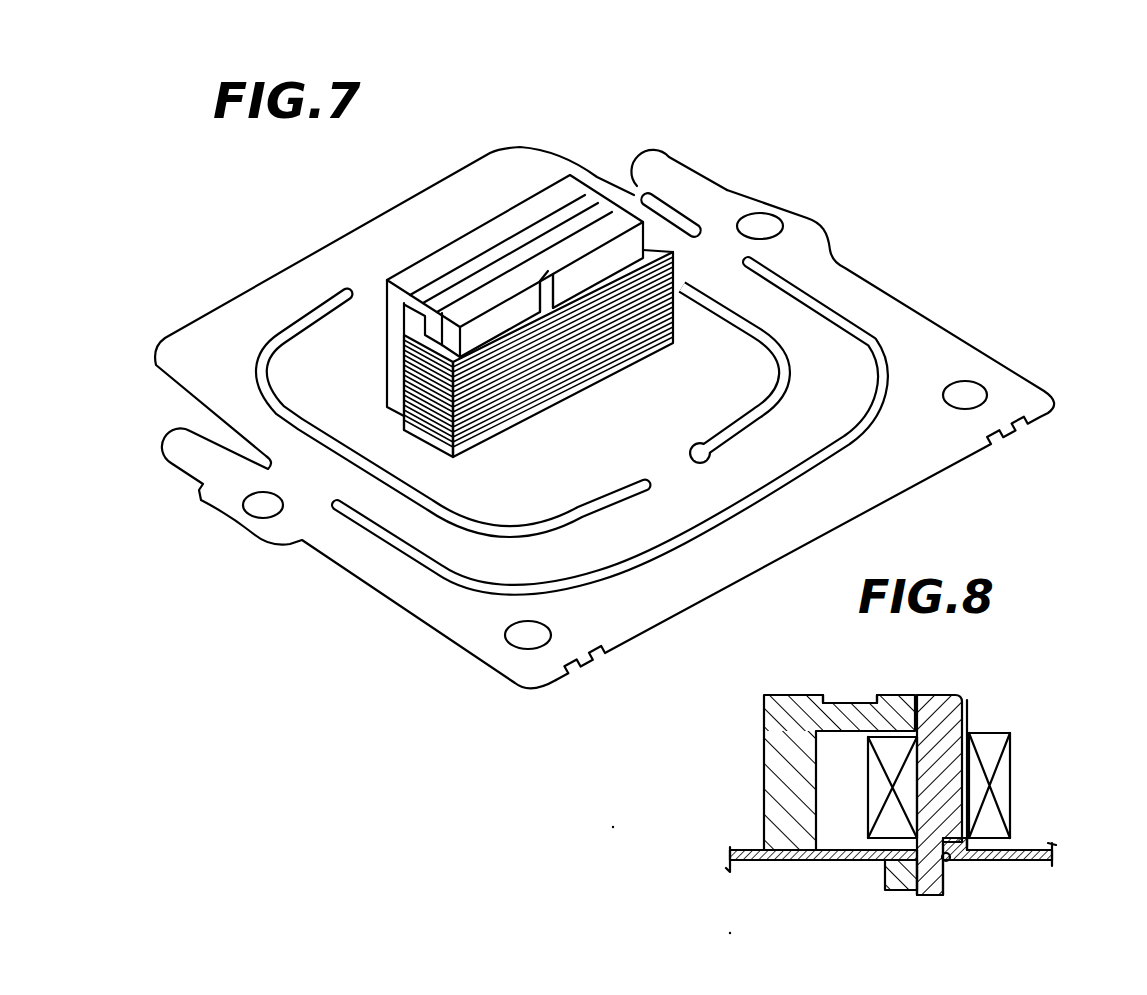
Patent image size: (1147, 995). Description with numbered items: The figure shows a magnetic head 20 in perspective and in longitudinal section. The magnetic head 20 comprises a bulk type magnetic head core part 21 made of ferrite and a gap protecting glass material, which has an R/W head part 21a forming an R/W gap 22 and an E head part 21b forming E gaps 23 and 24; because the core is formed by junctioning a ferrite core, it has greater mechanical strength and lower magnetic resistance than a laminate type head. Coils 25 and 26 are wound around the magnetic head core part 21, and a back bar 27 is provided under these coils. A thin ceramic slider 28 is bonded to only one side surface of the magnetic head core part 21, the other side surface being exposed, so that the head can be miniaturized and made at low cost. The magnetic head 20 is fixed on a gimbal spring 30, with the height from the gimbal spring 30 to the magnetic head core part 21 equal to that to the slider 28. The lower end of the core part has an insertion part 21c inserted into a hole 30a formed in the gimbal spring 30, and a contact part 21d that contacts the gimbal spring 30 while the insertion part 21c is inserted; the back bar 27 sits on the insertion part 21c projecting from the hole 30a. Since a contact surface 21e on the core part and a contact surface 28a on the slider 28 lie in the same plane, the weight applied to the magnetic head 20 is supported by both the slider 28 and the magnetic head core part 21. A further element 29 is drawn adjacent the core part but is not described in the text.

In FIG. 7, the magnetic head 20 is at (636, 131).
In FIG. 8, the magnetic head 20 is at (899, 667).
In FIG. 7, the magnetic head core part 21 is at (638, 203).
In FIG. 8, the magnetic head core part 21 is at (953, 688).
In FIG. 7, the R/W head part 21a is at (592, 270).
In FIG. 7, the E head part 21b is at (496, 327).
In FIG. 8, the insertion part 21c is at (933, 889).
In FIG. 8, the contact part 21d is at (955, 862).
In FIG. 8, the contact surface 21e is at (928, 694).
In FIG. 7, the R/W gap 22 is at (560, 262).
In FIG. 7, the E gap 23 is at (492, 250).
In FIG. 7, the E gap 24 is at (557, 405).
In FIG. 7, the coil 25 is at (672, 331).
In FIG. 8, the coil 25 is at (892, 787).
In FIG. 7, the coil 26 is at (433, 455).
In FIG. 8, the coil 26 is at (1010, 786).
In FIG. 8, the back bar 27 is at (898, 876).
In FIG. 7, the slider 28 is at (430, 272).
In FIG. 8, the slider 28 is at (770, 762).
In FIG. 8, the contact surface 28a is at (893, 693).
In FIG. 7, the yoke plate 29 is at (726, 190).
In FIG. 8, the yoke plate 29 is at (968, 717).
In FIG. 7, the gimbal spring 30 is at (853, 280).
In FIG. 8, the gimbal spring 30 is at (1030, 850).
In FIG. 8, the hole 30a is at (946, 866).